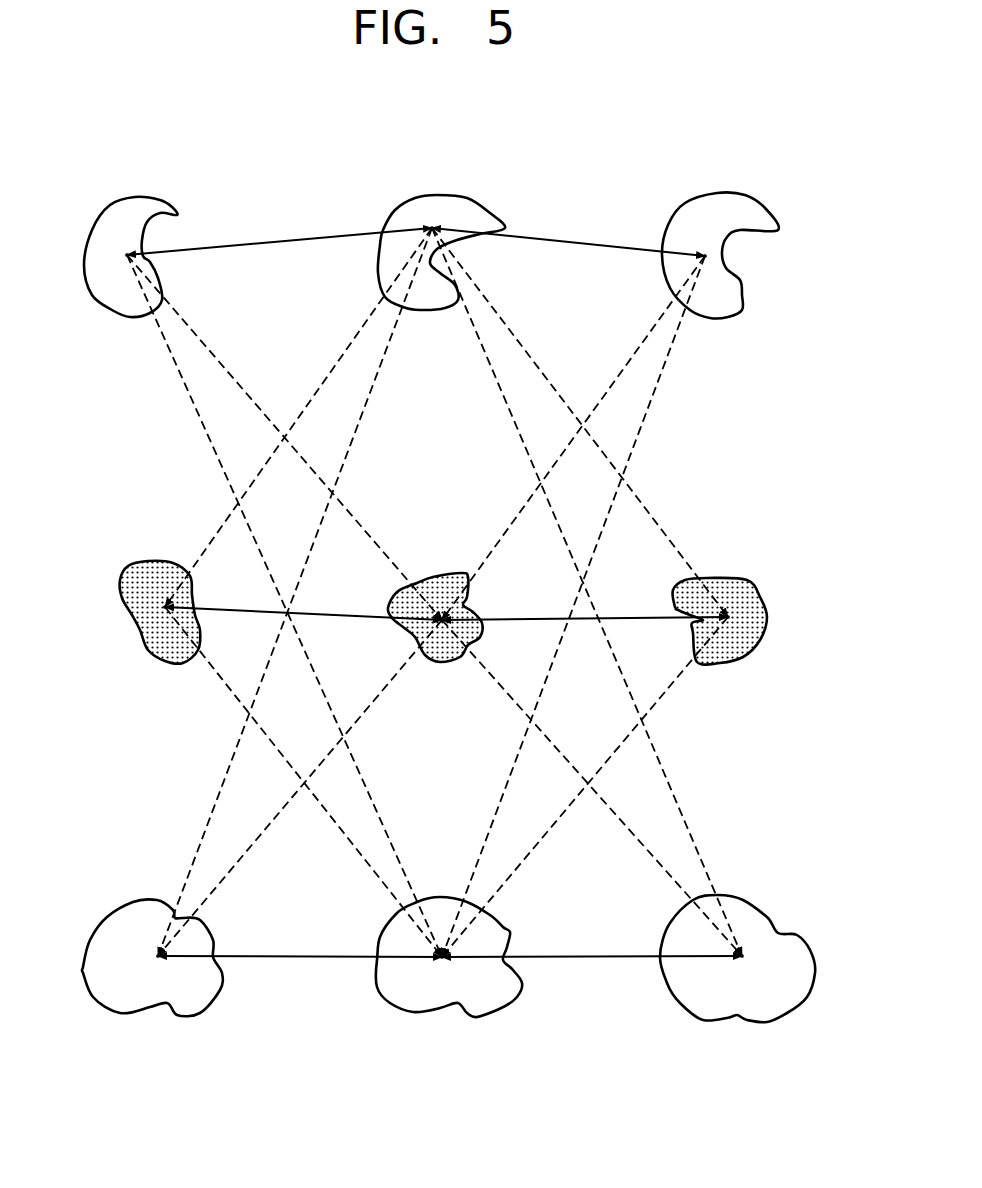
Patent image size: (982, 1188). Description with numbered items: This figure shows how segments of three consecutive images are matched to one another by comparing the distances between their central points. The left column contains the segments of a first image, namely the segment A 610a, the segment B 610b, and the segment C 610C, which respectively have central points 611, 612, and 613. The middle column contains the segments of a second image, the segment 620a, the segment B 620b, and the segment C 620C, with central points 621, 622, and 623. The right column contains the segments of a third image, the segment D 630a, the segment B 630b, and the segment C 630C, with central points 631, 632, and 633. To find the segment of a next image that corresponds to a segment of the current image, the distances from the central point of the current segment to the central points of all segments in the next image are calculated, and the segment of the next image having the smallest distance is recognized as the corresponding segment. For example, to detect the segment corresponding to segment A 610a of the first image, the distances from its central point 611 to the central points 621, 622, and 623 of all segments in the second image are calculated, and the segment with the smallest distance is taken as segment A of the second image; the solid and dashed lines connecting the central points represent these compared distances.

The segment A of the first image 610a is at (149, 203).
The central point of segment 610a 611 is at (127, 257).
The segment of the second image 620a is at (474, 212).
The central point of segment 620a 621 is at (432, 226).
The segment of the third image 630a is at (735, 203).
The central point of segment 630a 631 is at (705, 258).
The segment B of the first image 610b is at (150, 572).
The central point of segment 610b 612 is at (163, 609).
The segment B of the second image 620b is at (441, 578).
The central point of segment 620b 622 is at (440, 622).
The segment B of the third image 630b is at (704, 582).
The central point of segment 630b 632 is at (726, 618).
The segment C of the first image 610C is at (148, 908).
The central point of segment 610C 613 is at (158, 955).
The segment C of the second image 620C is at (493, 930).
The central point of segment 620C 623 is at (442, 955).
The segment C of the third image 630C is at (722, 912).
The central point of segment 630C 633 is at (742, 958).